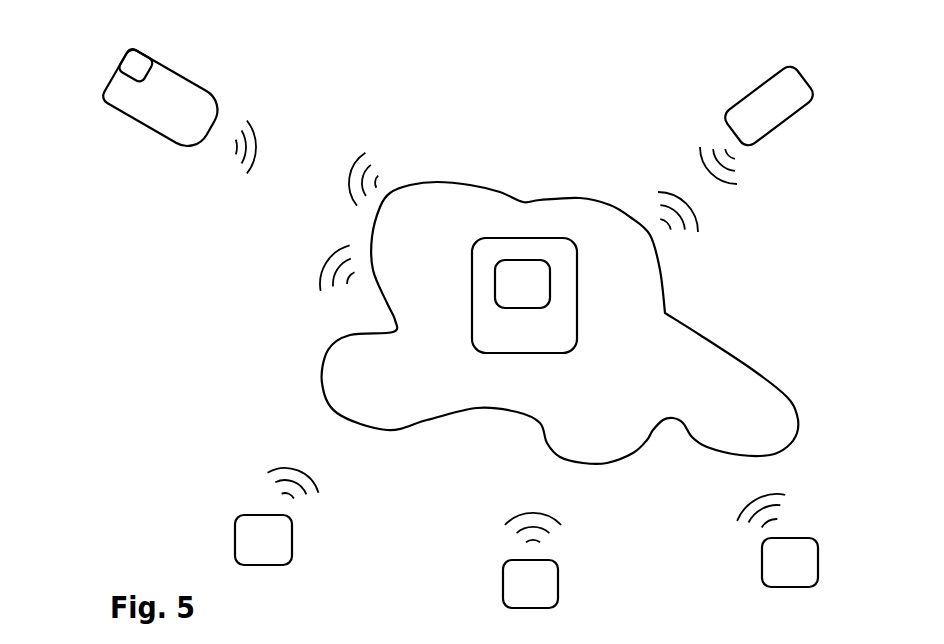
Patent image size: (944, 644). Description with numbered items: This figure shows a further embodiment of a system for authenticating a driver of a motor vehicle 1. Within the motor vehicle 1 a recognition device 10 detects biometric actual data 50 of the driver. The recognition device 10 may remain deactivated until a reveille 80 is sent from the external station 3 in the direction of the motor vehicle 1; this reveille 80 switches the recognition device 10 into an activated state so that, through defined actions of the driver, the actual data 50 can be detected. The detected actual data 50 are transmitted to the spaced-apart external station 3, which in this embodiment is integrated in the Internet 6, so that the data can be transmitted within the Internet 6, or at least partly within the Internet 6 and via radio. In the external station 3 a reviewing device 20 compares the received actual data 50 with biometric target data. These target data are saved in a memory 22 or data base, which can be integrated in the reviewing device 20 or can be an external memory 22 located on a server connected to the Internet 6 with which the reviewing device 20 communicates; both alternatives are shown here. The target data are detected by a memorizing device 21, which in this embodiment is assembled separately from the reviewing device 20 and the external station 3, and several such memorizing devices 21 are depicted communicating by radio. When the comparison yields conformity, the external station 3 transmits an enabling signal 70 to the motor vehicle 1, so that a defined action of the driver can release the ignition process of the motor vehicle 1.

The motor vehicle 1 is at (219, 56).
The recognition device 10 is at (128, 68).
The actual data 50 is at (252, 124).
The reveille 80 is at (362, 154).
The enabling signal 70 is at (322, 270).
The external station 3 is at (560, 323).
The Internet 6 is at (652, 384).
The reviewing device 20 is at (504, 347).
The memory 22 is at (540, 299).
The memorizing device 21 is at (281, 554).